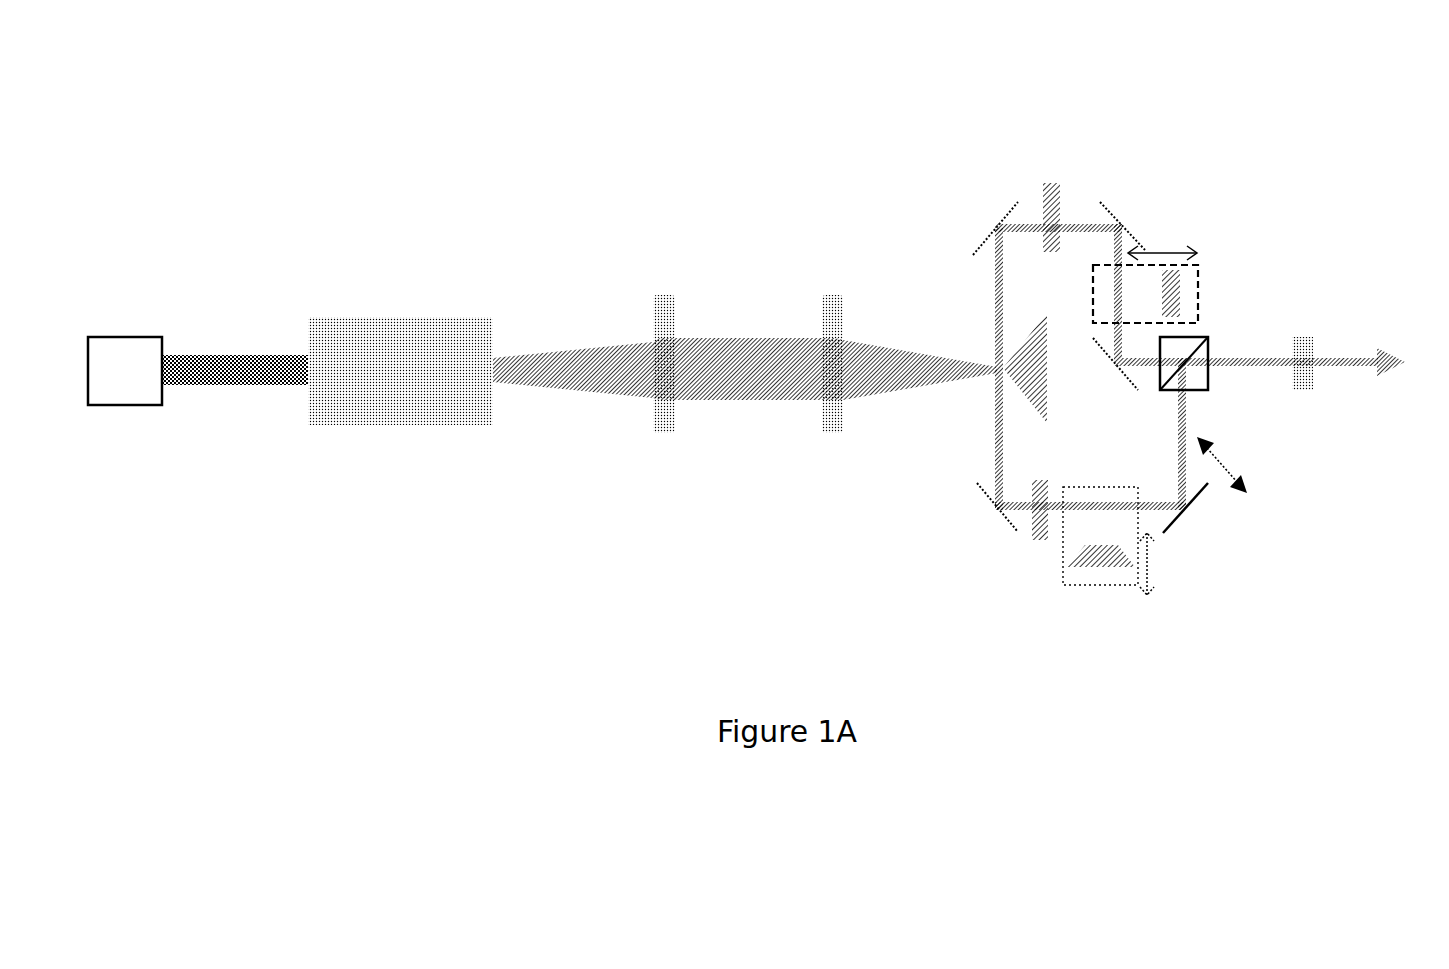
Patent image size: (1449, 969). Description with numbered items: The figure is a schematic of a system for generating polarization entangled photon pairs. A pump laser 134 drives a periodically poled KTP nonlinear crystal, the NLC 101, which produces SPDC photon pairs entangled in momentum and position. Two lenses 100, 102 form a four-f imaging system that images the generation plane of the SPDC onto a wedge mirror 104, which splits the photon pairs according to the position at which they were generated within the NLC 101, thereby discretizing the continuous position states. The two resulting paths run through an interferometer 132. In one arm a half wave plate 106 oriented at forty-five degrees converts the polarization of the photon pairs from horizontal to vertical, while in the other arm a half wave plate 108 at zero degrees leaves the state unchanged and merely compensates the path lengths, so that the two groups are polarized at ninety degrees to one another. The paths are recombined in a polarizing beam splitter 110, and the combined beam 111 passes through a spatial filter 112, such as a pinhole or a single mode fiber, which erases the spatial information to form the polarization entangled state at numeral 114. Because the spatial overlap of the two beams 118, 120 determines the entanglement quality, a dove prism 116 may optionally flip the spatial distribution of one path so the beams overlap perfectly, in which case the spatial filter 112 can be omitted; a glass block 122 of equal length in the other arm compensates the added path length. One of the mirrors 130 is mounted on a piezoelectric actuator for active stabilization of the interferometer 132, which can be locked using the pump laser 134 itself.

The pump laser 134 is at (139, 338).
The NLC 101 is at (363, 318).
The lens 100 is at (672, 304).
The lens 102 is at (827, 297).
The interferometer 132 is at (960, 172).
The half wave plate 108 is at (1060, 203).
The half wave plate 106 is at (1042, 527).
The wedge mirror 104 is at (1003, 378).
The beam 118 is at (1178, 412).
The glass block 122 is at (1185, 288).
The beam 120 is at (1123, 293).
The polarizing beam splitter 110 is at (1190, 335).
The spatial filter 112 is at (1302, 337).
The polarization entangled state 114 is at (1348, 365).
The combined beam 111 is at (1237, 363).
The mirror 130 is at (1193, 500).
The dove prism 116 is at (1097, 568).